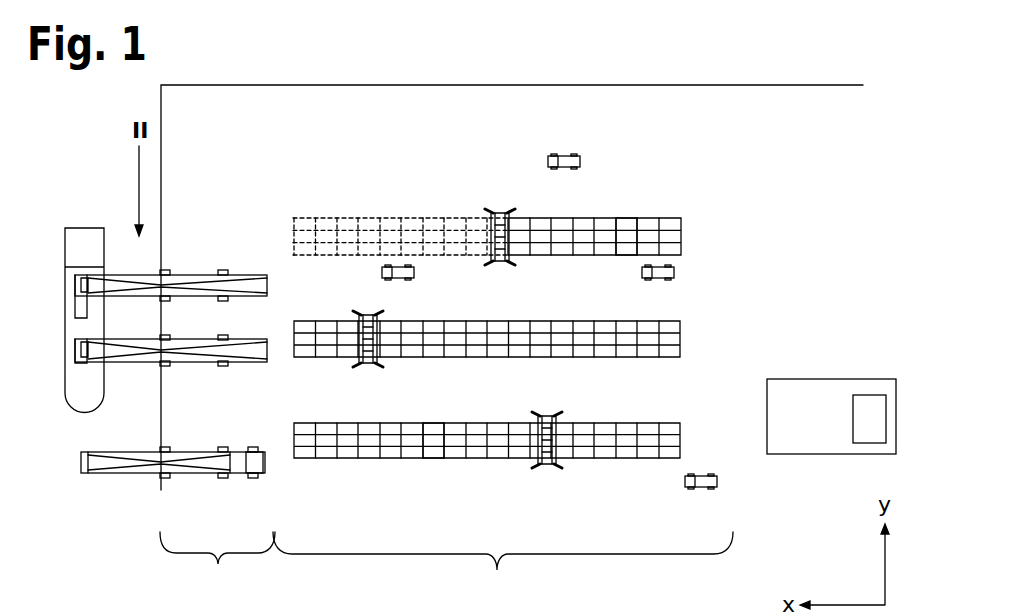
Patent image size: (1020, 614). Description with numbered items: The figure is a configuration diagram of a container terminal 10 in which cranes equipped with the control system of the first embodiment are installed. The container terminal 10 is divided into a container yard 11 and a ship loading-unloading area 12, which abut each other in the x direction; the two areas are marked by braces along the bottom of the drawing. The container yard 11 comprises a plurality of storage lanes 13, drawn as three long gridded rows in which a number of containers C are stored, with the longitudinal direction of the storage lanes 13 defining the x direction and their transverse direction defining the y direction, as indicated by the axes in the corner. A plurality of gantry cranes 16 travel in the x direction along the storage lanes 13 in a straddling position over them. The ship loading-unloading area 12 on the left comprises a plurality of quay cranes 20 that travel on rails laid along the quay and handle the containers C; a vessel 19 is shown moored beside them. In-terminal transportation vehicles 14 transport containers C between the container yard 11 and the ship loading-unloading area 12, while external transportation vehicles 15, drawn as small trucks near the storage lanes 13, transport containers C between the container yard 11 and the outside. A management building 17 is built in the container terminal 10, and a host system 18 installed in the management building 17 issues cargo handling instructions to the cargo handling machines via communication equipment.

The container terminal 10 is at (765, 108).
The container yard 11 is at (503, 568).
The ship loading-unloading area 12 is at (217, 568).
The storage lane 13 is at (694, 237).
The in-terminal transportation vehicle 14 is at (253, 446).
The external transportation vehicle 15 is at (562, 154).
The gantry crane 16 is at (498, 208).
The management building 17 is at (828, 378).
The host system 18 is at (872, 394).
The supply unit 19 is at (86, 228).
The quay crane 20 is at (201, 274).
The container C is at (629, 217).